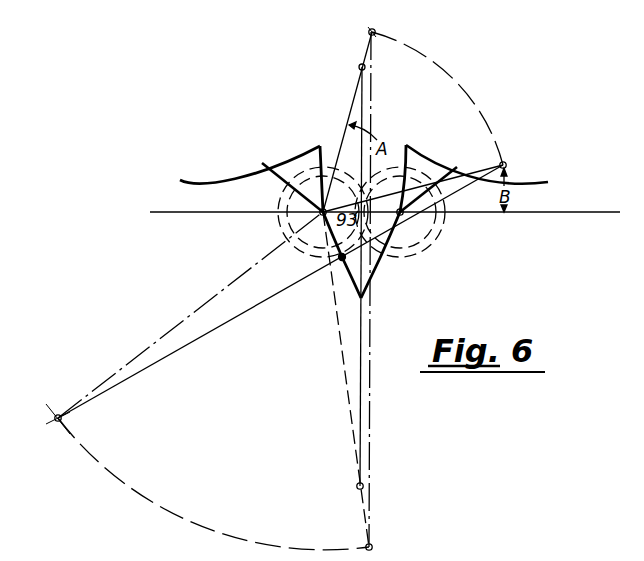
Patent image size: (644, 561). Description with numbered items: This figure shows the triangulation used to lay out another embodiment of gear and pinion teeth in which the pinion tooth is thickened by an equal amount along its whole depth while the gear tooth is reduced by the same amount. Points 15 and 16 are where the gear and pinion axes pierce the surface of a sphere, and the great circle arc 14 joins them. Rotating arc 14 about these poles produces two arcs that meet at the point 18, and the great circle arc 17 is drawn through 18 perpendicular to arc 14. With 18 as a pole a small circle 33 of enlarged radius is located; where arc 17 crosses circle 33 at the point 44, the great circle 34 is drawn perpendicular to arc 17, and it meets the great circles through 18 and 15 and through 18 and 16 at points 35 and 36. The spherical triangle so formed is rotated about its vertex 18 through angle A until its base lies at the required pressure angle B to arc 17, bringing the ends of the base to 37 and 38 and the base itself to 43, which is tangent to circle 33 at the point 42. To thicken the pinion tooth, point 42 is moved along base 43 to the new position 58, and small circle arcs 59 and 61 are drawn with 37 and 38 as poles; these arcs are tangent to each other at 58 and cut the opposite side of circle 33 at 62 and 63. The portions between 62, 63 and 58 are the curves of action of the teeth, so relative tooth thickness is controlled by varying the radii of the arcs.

The great circle arc 14 is at (363, 414).
The axis point 15 is at (357, 487).
The axis point 16 is at (360, 66).
The great circle arc 17 is at (573, 213).
The intersection point 18 is at (326, 209).
The small circle 33 is at (308, 255).
The great circle 34 is at (372, 445).
The intersection point 35 is at (370, 546).
The intersection point 36 is at (375, 31).
The rotated base end point 37 is at (61, 418).
The rotated base end point 38 is at (505, 164).
The tangent point 42 is at (378, 260).
The base of rotated triangle 43 is at (192, 343).
The crossing point 44 is at (376, 200).
The shifted tangent point 58 is at (342, 261).
The small circle arc 59 is at (298, 215).
The small circle arc 61 is at (320, 190).
The intersection point 62 is at (283, 181).
The intersection point 63 is at (320, 147).